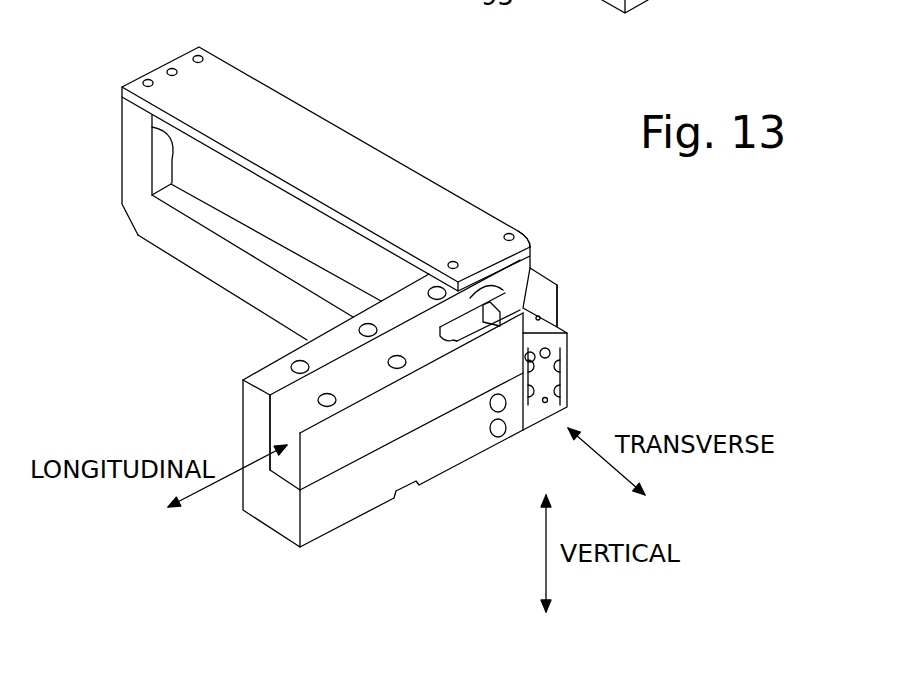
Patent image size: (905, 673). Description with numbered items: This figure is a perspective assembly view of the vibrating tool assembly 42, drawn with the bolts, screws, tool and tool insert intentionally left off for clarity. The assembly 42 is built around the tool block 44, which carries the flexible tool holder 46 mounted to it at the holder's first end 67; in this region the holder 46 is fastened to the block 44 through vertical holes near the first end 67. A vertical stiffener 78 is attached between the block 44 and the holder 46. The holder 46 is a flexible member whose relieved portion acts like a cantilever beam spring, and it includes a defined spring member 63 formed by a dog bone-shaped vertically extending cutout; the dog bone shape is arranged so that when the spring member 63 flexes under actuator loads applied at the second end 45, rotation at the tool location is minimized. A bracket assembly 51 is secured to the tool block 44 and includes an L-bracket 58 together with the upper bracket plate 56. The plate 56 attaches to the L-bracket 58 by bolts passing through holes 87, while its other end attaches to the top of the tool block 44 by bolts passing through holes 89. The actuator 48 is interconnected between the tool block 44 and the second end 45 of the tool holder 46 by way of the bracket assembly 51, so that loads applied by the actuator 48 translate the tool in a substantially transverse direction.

The vibrating tool assembly 42 is at (527, 228).
The tool block 44 is at (262, 485).
The second end 45 is at (534, 288).
The flexible tool holder 46 is at (433, 393).
The actuator 48 is at (238, 193).
The bracket assembly 51 is at (167, 252).
The upper bracket plate 56 is at (380, 176).
The L-bracket 58 is at (242, 275).
The spring member 63 is at (557, 305).
The first end 67 is at (310, 410).
The vertical stiffener 78 is at (537, 387).
The holes 87 is at (197, 56).
The holes 89 is at (509, 232).